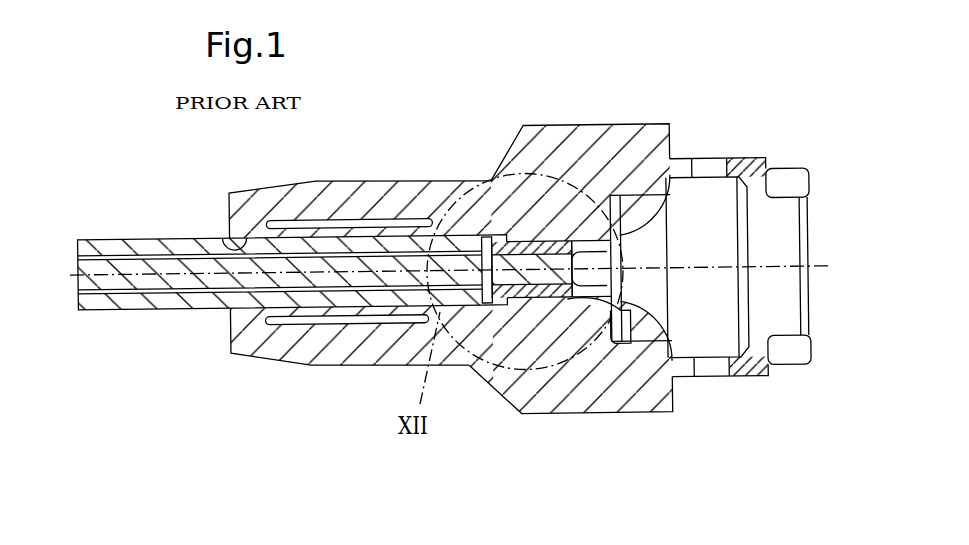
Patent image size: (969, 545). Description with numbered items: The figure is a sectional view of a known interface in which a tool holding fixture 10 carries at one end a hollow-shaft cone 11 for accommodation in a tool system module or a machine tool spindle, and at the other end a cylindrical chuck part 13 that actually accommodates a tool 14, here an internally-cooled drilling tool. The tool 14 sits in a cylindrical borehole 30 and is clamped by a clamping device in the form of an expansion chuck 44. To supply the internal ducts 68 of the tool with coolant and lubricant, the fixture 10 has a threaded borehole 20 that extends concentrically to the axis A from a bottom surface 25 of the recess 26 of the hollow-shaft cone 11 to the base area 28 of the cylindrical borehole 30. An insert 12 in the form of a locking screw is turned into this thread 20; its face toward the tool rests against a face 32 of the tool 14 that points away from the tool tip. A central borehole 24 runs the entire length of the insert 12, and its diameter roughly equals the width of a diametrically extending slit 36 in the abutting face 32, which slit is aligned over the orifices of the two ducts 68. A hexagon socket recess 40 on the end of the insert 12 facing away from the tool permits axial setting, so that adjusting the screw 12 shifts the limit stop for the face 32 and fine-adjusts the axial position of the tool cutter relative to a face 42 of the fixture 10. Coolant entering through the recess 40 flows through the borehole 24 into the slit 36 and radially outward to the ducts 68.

The tool holding fixture 10 is at (558, 141).
The hollow-shaft cone 11 is at (743, 166).
The insert 12 is at (553, 296).
The cylindrical chuck part 13 is at (343, 346).
The tool 14 is at (160, 300).
The threaded borehole 20 is at (537, 245).
The central borehole 24 is at (633, 324).
The bottom surface 25 is at (676, 182).
The recess 26 is at (722, 319).
The base area 28 is at (487, 311).
The cylindrical borehole 30 is at (223, 238).
The face 32 is at (505, 307).
The diametrically extending slit 36 is at (490, 241).
The hexagon socket recess 40 is at (596, 257).
The face 42 is at (228, 329).
The expansion chuck 44 is at (354, 227).
The internal ducts 68 is at (122, 258).
The axis A is at (820, 275).